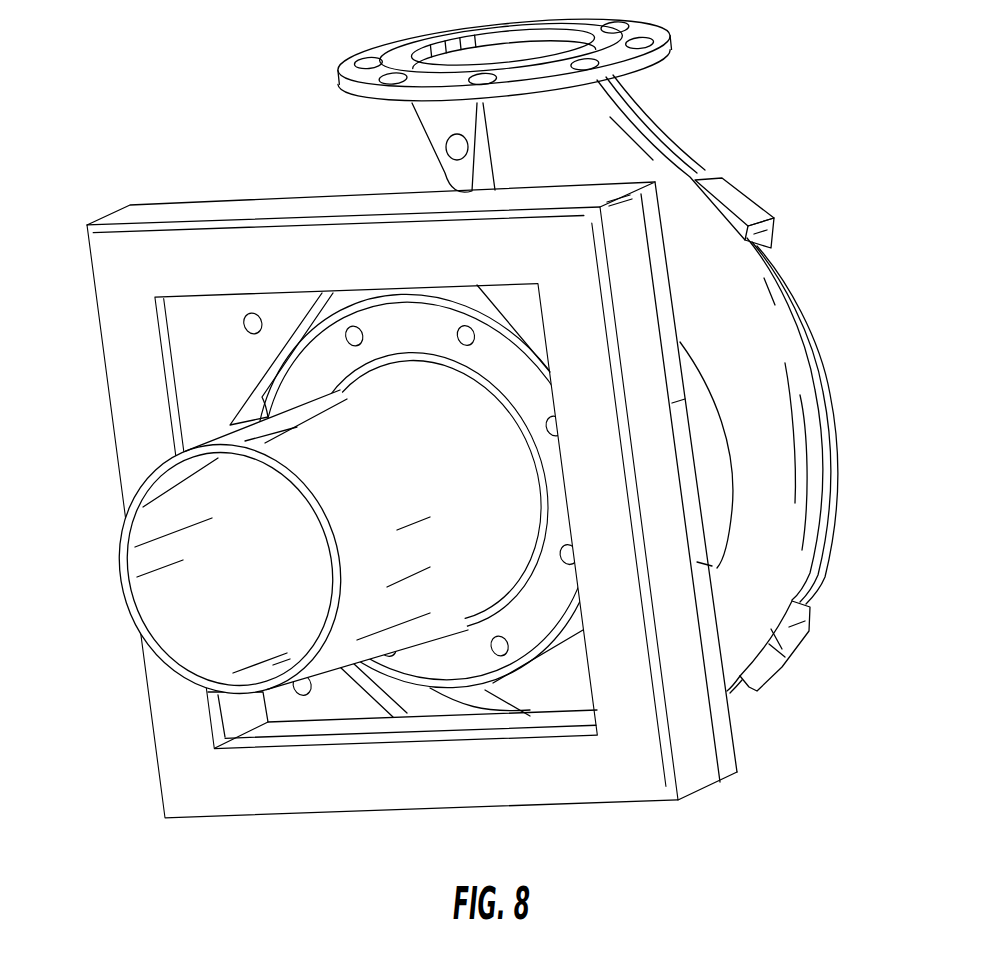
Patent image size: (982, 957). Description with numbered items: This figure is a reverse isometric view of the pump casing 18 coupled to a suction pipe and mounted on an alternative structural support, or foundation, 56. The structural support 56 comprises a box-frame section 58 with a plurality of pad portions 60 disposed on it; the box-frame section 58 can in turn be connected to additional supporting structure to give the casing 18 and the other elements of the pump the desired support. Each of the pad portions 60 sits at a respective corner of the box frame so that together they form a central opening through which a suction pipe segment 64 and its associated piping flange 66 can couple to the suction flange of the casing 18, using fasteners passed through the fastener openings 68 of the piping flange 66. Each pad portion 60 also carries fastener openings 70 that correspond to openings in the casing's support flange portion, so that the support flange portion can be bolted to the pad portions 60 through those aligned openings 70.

The pump casing 18 is at (820, 264).
The structural support 56 is at (688, 798).
The box-frame section 58 is at (565, 783).
The pad portions 60 is at (237, 347).
The suction pipe segment 64 is at (126, 563).
The piping flange 66 is at (397, 330).
The fastener openings 68 is at (548, 429).
The fastener openings 70 is at (262, 316).